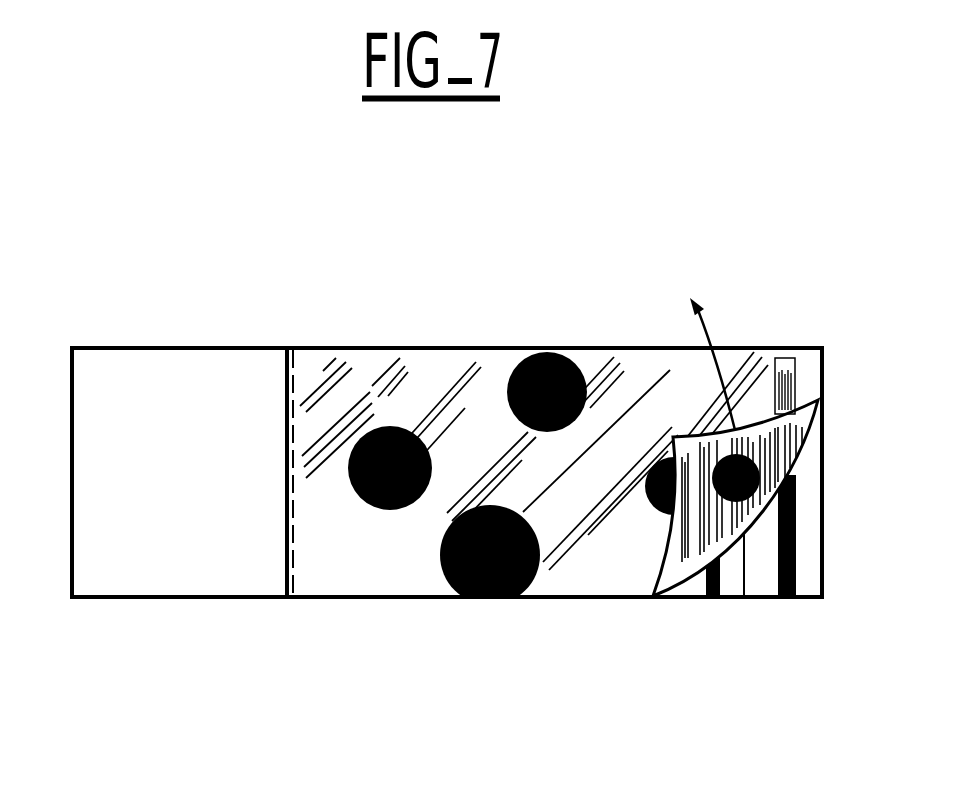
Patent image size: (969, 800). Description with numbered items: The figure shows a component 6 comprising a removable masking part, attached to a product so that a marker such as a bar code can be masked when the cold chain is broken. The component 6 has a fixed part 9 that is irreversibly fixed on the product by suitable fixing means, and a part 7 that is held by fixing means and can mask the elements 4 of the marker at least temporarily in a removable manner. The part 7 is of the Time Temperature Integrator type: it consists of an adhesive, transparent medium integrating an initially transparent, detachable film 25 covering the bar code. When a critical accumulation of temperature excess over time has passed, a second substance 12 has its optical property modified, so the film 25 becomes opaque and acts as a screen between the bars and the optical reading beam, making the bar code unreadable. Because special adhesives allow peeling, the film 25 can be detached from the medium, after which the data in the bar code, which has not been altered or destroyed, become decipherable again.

The elements of the marker 4 is at (796, 558).
The component 6 is at (770, 348).
The removable part of the component 7 is at (823, 618).
The fixed part of the component 9 is at (62, 621).
The second substance 12 is at (377, 428).
The detachable film 25 is at (460, 372).